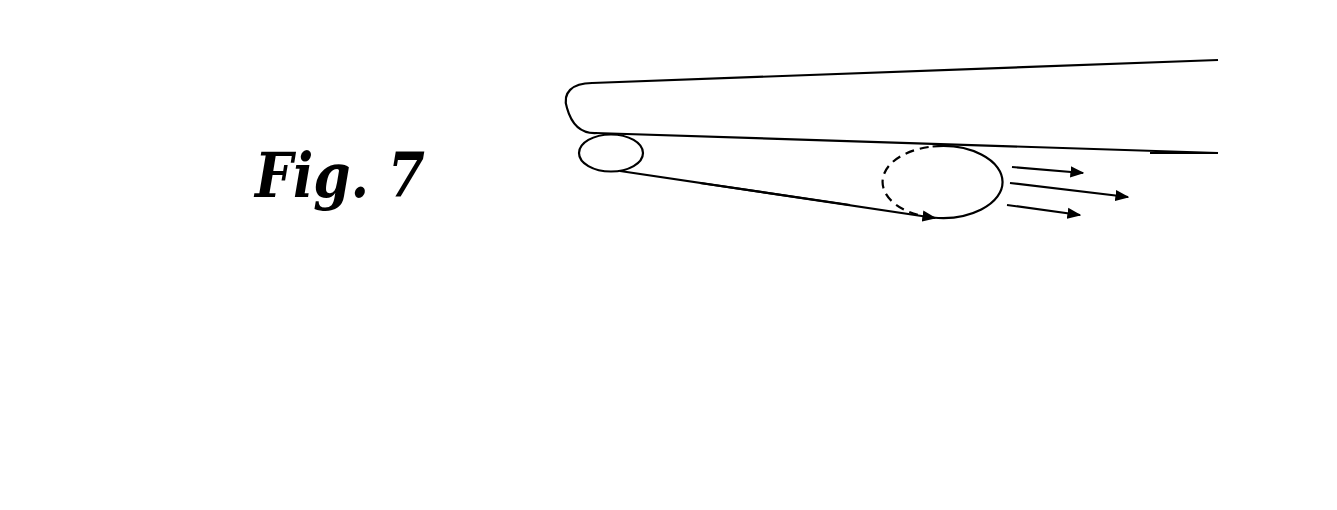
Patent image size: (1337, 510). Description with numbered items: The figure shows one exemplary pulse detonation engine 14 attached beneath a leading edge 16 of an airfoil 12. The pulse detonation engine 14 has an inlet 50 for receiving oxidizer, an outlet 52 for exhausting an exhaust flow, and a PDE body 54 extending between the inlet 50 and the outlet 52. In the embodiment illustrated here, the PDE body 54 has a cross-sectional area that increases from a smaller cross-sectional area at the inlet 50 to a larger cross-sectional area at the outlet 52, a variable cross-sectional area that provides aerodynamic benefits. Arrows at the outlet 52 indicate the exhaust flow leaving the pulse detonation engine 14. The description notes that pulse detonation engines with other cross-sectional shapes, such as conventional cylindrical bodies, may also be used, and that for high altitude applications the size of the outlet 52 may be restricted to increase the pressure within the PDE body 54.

The airfoil 12 is at (1185, 127).
The pulse detonation engine 14 is at (713, 212).
The leading edge 16 is at (566, 104).
The inlet 50 is at (598, 155).
The outlet 52 is at (993, 205).
The PDE body 54 is at (793, 177).